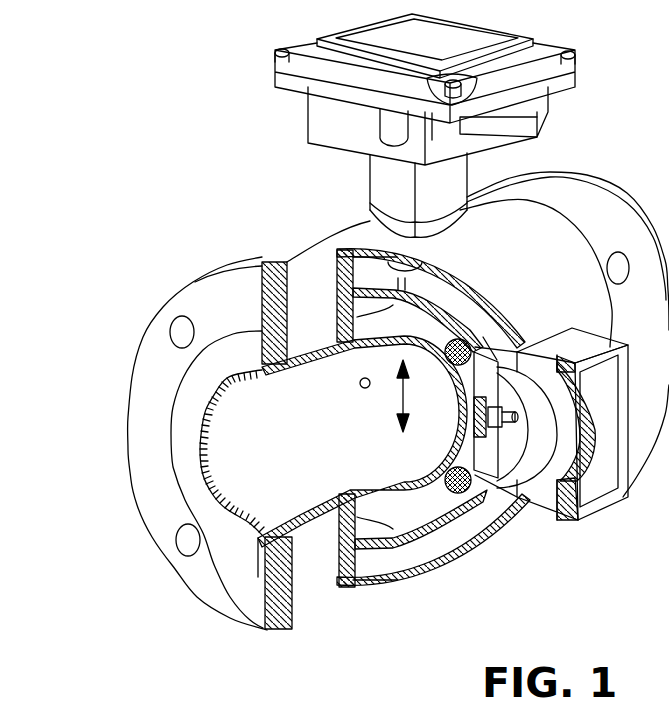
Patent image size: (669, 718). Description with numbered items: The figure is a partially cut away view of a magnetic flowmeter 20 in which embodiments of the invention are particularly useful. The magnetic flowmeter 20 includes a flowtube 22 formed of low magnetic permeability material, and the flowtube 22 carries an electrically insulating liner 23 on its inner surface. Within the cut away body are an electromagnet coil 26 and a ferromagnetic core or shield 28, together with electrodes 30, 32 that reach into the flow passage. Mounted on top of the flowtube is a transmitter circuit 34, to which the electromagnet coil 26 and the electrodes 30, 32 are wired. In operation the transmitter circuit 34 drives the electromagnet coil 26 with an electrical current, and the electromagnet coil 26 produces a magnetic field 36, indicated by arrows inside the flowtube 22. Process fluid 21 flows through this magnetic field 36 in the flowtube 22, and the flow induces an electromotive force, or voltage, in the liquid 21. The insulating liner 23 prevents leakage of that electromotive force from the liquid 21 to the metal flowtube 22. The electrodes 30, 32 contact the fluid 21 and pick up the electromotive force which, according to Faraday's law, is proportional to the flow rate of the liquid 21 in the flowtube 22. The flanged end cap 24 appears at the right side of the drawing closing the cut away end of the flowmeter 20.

The magnetic flowmeter 20 is at (139, 97).
The process fluid 21 is at (280, 480).
The flowtube 22 is at (317, 330).
The electrically insulating liner 23 is at (210, 397).
The end cap flange 24 is at (483, 350).
The electromagnet coil 26 is at (483, 480).
The ferromagnetic core or shield 28 is at (437, 295).
The electrode 30 is at (365, 388).
The electrode 32 is at (580, 465).
The transmitter circuit 34 is at (308, 105).
The magnetic field 36 is at (400, 387).